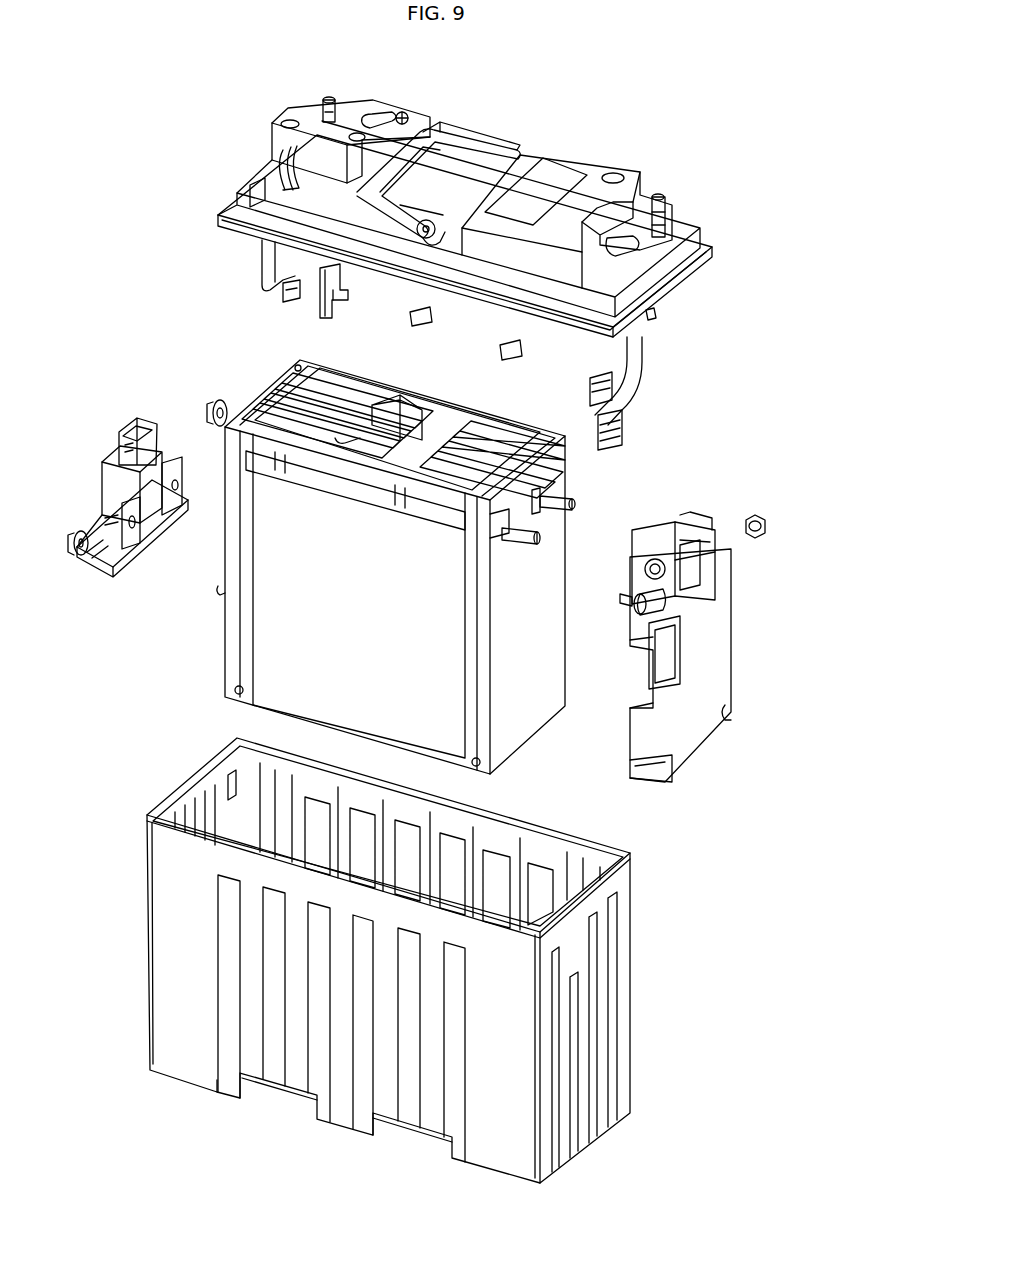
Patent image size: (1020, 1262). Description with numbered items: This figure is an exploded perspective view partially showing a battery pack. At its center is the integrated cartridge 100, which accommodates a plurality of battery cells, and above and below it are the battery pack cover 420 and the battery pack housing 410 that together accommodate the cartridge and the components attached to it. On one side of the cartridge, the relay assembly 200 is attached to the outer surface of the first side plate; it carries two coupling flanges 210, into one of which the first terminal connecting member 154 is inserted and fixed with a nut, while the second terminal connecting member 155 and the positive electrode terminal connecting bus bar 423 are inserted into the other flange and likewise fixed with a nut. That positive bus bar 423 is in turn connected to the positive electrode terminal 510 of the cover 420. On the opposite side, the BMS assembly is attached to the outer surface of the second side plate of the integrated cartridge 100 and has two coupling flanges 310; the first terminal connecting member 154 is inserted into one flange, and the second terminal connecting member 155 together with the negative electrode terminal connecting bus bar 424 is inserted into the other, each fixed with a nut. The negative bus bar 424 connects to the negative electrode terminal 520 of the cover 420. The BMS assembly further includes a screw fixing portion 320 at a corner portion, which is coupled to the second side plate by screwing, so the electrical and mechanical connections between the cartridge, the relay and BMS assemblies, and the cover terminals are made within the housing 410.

The integrated cartridge 100 is at (496, 594).
The first terminal connecting member 154 is at (527, 543).
The second terminal connecting member 155 is at (572, 507).
The relay assembly 200 is at (117, 483).
The coupling flange 210 is at (177, 490).
The coupling flange 310 is at (688, 526).
The screw fixing portion 320 is at (643, 604).
The battery pack housing 410 is at (615, 1047).
The battery pack cover 420 is at (474, 255).
The positive electrode terminal connecting bus bar 423 is at (317, 310).
The negative electrode terminal connecting bus bar 424 is at (653, 315).
The positive electrode terminal 510 is at (330, 100).
The negative electrode terminal 520 is at (667, 213).